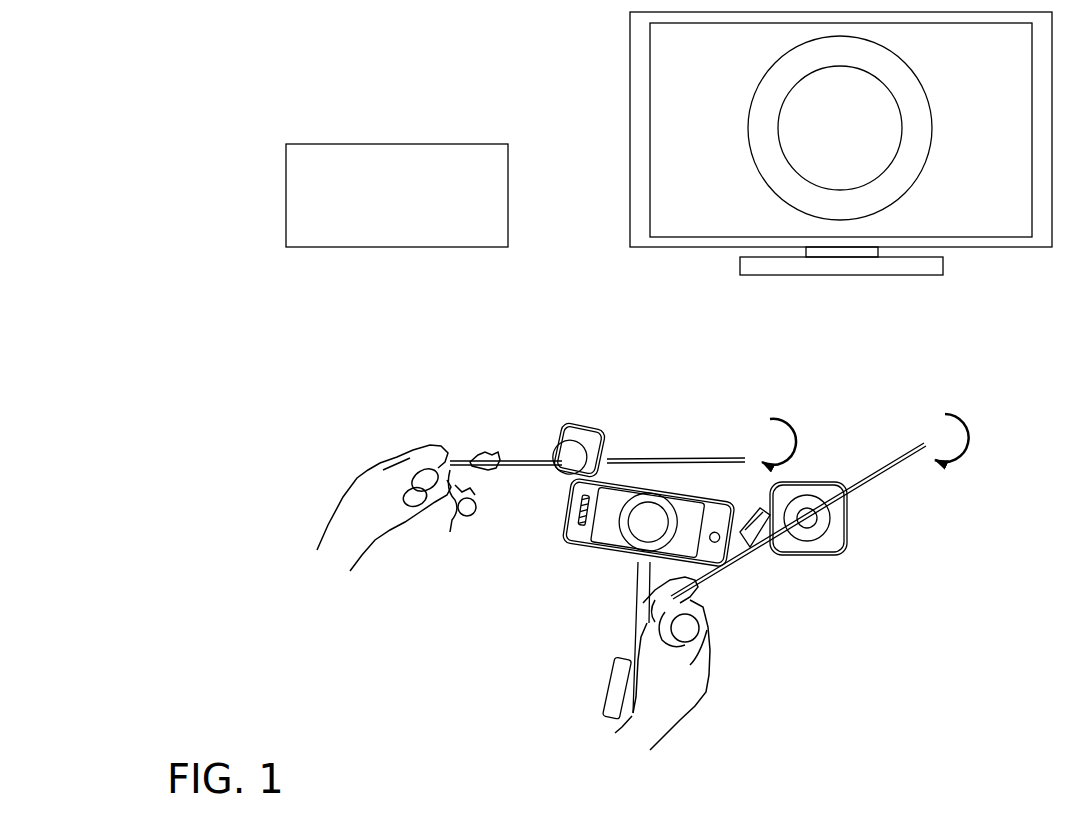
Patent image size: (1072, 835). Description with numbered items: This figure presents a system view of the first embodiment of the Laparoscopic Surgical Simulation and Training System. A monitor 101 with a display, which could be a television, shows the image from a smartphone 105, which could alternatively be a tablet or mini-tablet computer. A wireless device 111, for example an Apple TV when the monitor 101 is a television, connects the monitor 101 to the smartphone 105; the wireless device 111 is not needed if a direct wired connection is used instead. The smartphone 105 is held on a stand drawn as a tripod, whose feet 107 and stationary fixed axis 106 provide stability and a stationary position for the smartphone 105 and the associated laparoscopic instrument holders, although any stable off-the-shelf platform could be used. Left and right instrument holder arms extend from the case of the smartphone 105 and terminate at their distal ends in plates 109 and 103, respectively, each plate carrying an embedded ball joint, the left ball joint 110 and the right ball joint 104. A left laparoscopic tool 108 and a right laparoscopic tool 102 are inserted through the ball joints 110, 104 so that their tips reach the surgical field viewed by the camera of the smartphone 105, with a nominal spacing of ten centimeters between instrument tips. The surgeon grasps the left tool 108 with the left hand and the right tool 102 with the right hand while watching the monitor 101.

The monitor 101 is at (692, 262).
The right laparoscopic tool 102 is at (820, 495).
The right instrument holder plate 103 is at (850, 518).
The right ball joint 104 is at (815, 533).
The smartphone 105 is at (568, 550).
The stationary fixed axis 106 is at (632, 593).
The feet 107 is at (595, 703).
The left laparoscopic tool 108 is at (748, 428).
The left instrument holder plate 109 is at (562, 417).
The left ball joint 110 is at (553, 456).
The wireless device 111 is at (355, 255).